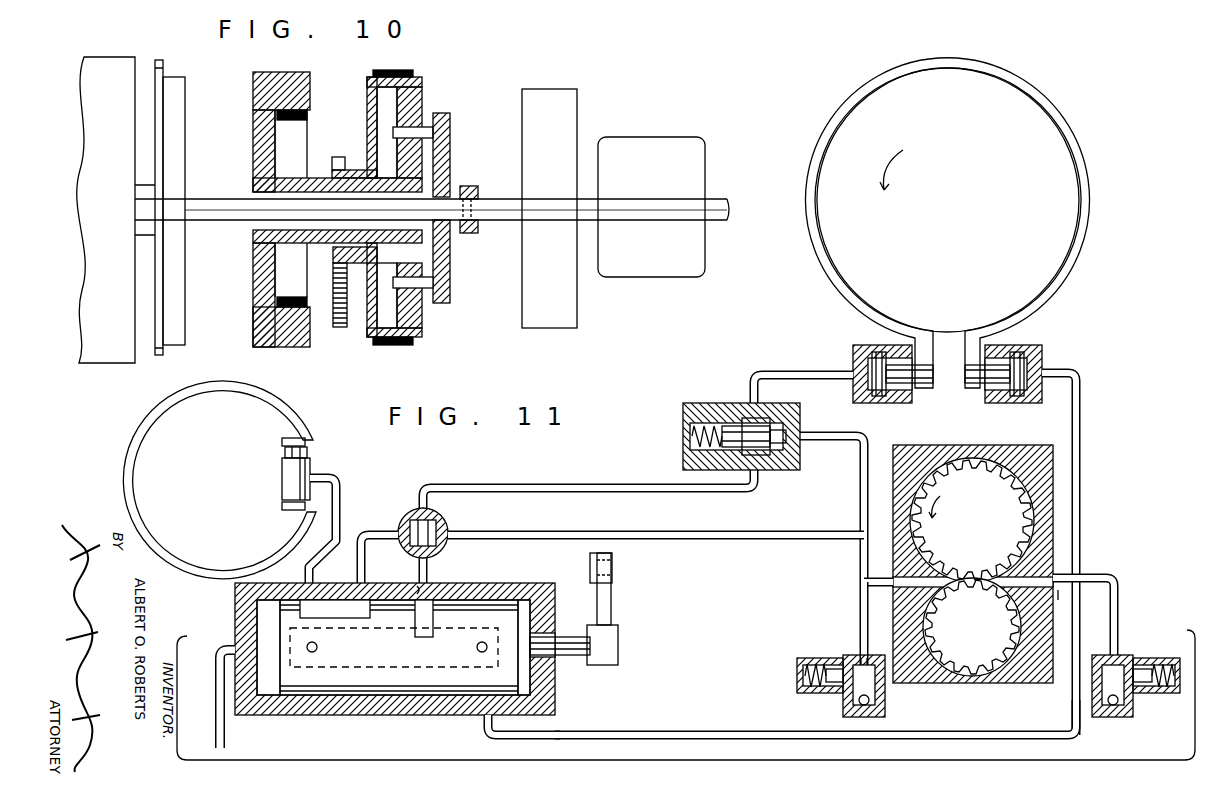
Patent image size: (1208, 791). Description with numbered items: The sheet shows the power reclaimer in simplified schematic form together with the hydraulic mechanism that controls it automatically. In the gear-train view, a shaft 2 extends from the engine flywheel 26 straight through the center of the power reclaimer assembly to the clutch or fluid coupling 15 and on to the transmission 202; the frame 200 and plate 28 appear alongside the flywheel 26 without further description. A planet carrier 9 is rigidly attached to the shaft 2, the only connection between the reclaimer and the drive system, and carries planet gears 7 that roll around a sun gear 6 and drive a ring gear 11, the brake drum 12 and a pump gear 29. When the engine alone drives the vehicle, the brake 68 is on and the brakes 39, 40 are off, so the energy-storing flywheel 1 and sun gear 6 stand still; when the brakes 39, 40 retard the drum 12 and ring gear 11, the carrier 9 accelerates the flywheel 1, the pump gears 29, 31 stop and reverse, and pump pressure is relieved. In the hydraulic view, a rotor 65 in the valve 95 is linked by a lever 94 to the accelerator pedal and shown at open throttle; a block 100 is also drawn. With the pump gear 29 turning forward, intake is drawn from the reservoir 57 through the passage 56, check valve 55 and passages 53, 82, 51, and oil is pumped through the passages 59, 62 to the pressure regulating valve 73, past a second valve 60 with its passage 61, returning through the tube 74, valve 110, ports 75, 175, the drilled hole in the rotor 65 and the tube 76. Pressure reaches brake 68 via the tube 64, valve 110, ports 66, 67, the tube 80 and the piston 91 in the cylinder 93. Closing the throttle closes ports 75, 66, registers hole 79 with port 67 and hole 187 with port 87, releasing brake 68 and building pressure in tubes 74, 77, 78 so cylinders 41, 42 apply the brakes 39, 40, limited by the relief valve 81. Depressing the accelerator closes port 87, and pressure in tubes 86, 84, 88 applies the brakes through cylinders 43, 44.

In FIG. 10, the support frame 200 is at (94, 128).
In FIG. 10, the thrust plate 28 is at (163, 66).
In FIG. 10, the engine flywheel 26 is at (176, 125).
In FIG. 10, the shaft 2 is at (206, 208).
In FIG. 10, the flywheel 1 is at (253, 313).
In FIG. 10, the brake 68 is at (308, 115).
In FIG. 11, the brake 68 is at (141, 420).
In FIG. 10, the pump gear 29 is at (336, 157).
In FIG. 11, the pump gear 29 is at (973, 564).
In FIG. 10, the planet gears 7 is at (425, 104).
In FIG. 10, the brake 39 is at (425, 199).
In FIG. 11, the brake 39 is at (948, 216).
In FIG. 10, the brake 40 is at (410, 70).
In FIG. 11, the brake 40 is at (920, 68).
In FIG. 10, the planet carrier 9 is at (452, 142).
In FIG. 10, the sun gear 6 is at (450, 168).
In FIG. 10, the brake drum 12 is at (368, 337).
In FIG. 11, the brake drum 12 is at (947, 200).
In FIG. 10, the ring gear 11 is at (425, 320).
In FIG. 10, the pump gear 31 is at (340, 328).
In FIG. 11, the pump gear 31 is at (972, 627).
In FIG. 10, the clutch or fluid coupling 15 is at (551, 92).
In FIG. 10, the transmission 202 is at (664, 152).
In FIG. 11, the cylinder 41 is at (874, 362).
In FIG. 11, the cylinder 42 is at (866, 345).
In FIG. 11, the cylinder 43 is at (1016, 362).
In FIG. 11, the cylinder 44 is at (1018, 345).
In FIG. 11, the tube 77 is at (803, 373).
In FIG. 11, the tube 78 is at (768, 372).
In FIG. 11, the tube 84 is at (1092, 554).
In FIG. 11, the tube 88 is at (1082, 448).
In FIG. 11, the passage 62 is at (860, 486).
In FIG. 11, the tube 74 is at (569, 486).
In FIG. 11, the pressure regulating valve 73 is at (712, 403).
In FIG. 11, the valve 110 is at (447, 522).
In FIG. 11, the tube 64 is at (366, 530).
In FIG. 11, the port 66 is at (386, 570).
In FIG. 11, the port 75 is at (416, 586).
In FIG. 11, the piston 91 is at (284, 453).
In FIG. 11, the cylinder 93 is at (282, 480).
In FIG. 11, the tube 80 is at (343, 501).
In FIG. 11, the port 67 is at (304, 584).
In FIG. 11, the valve 95 is at (336, 715).
In FIG. 11, the rotor 65 is at (452, 700).
In FIG. 11, the valve block 100 is at (335, 609).
In FIG. 11, the port 175 is at (418, 636).
In FIG. 11, the hole 79 is at (318, 647).
In FIG. 11, the hole 187 is at (476, 647).
In FIG. 11, the lever 94 is at (604, 606).
In FIG. 11, the tube 76 is at (204, 660).
In FIG. 11, the reservoir 57 is at (178, 698).
In FIG. 11, the port 87 is at (494, 726).
In FIG. 11, the tube 86 is at (748, 732).
In FIG. 11, the passage 59 is at (882, 590).
In FIG. 11, the passage 82 is at (1062, 602).
In FIG. 11, the passage 51 is at (1042, 578).
In FIG. 11, the passage 53 is at (1119, 626).
In FIG. 11, the conduit 61 is at (860, 603).
In FIG. 11, the relief valve 60 is at (843, 711).
In FIG. 11, the relief valve 81 is at (829, 660).
In FIG. 11, the check valve 55 is at (1108, 702).
In FIG. 11, the passage 56 is at (1115, 704).